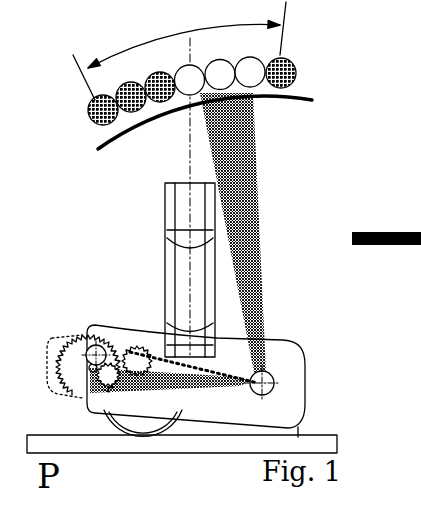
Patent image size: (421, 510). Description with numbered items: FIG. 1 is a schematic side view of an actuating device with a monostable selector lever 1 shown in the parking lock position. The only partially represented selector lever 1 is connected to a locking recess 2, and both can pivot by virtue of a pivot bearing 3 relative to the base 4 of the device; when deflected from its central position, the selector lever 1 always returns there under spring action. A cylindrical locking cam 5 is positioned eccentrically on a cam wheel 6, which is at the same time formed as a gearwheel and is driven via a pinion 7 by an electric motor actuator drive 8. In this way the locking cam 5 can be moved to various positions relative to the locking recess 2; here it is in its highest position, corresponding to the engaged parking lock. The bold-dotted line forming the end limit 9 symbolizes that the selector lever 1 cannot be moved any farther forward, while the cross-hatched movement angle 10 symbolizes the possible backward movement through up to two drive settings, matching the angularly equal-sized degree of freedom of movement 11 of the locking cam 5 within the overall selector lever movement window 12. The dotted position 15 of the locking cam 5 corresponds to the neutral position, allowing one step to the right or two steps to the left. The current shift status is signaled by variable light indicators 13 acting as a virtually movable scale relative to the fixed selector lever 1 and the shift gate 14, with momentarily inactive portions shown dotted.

The selector lever 1 is at (183, 218).
The locking recess 2 is at (48, 350).
The pivot bearing 3 is at (262, 383).
The base 4 is at (307, 444).
The locking cam 5 is at (96, 355).
The cam wheel 6 is at (78, 383).
The pinion 7 is at (143, 363).
The actuator drive 8 is at (143, 425).
The end limit 9 is at (207, 147).
The movement angle 10 is at (234, 143).
The degree of freedom of movement 11 is at (167, 380).
The selector lever movement window 12 is at (179, 51).
The light indicators 13 is at (320, 69).
The shift gate 14 is at (105, 144).
The position of the locking cam 15 is at (107, 377).